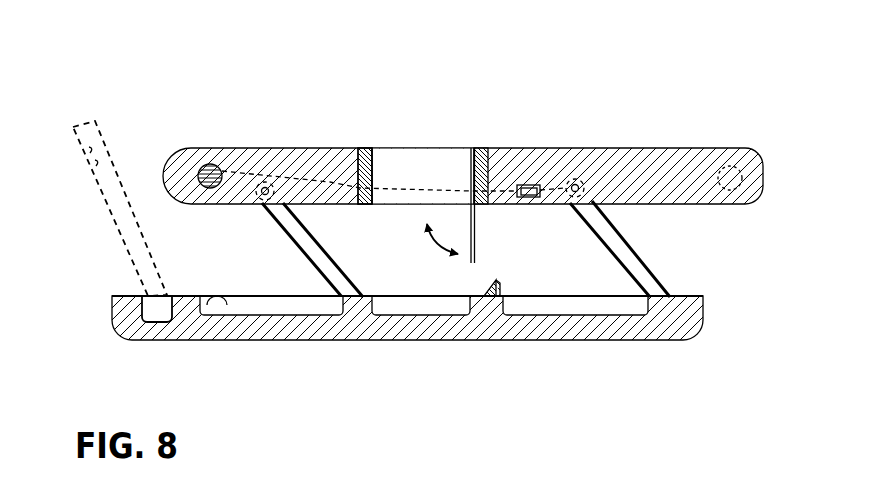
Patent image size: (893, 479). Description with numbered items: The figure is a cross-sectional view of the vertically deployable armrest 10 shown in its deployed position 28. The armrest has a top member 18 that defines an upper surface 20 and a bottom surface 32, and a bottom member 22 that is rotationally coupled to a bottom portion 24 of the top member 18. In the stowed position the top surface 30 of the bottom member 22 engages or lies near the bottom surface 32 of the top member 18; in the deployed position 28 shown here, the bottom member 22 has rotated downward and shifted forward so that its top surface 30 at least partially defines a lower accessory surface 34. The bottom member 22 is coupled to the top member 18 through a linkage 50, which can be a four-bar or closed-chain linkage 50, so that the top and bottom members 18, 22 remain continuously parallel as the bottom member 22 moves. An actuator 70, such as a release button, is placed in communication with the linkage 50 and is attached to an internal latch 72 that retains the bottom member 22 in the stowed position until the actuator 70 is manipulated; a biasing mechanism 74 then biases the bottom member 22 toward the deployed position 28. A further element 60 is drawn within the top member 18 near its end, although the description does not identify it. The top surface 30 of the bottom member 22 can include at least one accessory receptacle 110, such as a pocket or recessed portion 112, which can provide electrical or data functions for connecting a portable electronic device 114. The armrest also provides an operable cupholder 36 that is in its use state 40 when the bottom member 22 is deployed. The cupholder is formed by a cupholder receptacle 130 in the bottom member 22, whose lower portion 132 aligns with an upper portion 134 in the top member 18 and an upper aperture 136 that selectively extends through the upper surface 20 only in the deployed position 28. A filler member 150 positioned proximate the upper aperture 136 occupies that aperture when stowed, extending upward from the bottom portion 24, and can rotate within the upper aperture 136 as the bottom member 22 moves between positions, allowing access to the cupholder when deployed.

The vertically deployable armrest 10 is at (511, 86).
The top member 18 is at (649, 198).
The upper surface 20 is at (653, 147).
The bottom member 22 is at (578, 328).
The bottom portion 24 is at (707, 210).
The deployed position 28 is at (221, 118).
The top surface 30 is at (690, 290).
The bottom surface 32 is at (243, 206).
The lower accessory surface 34 is at (343, 290).
The operable cupholder 36 is at (405, 90).
The use state 40 is at (575, 122).
The linkage 50 is at (606, 232).
The wireless module 60 is at (735, 148).
The actuator 70 is at (205, 165).
The internal latch 72 is at (530, 186).
The biasing mechanism 74 is at (585, 184).
The accessory receptacle 110 is at (146, 292).
The recessed portion 112 is at (207, 304).
The portable electronic device 114 is at (80, 121).
The cupholder receptacle 130 is at (392, 141).
The lower portion 132 is at (439, 290).
The upper portion 134 is at (448, 141).
The upper aperture 136 is at (370, 146).
The filler member 150 is at (474, 224).